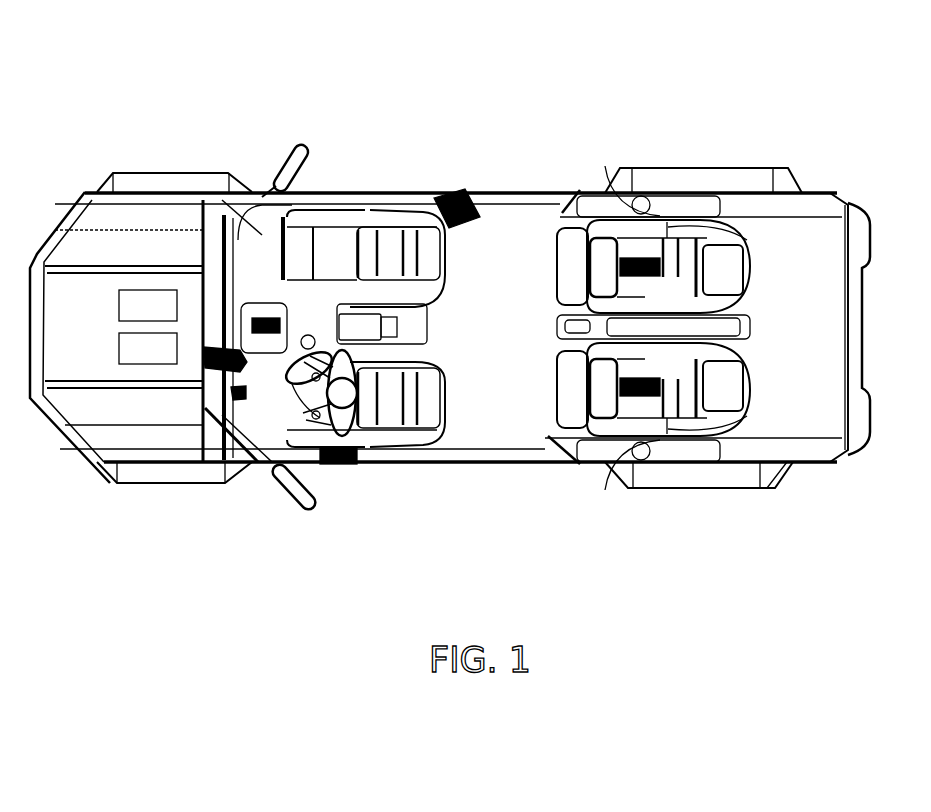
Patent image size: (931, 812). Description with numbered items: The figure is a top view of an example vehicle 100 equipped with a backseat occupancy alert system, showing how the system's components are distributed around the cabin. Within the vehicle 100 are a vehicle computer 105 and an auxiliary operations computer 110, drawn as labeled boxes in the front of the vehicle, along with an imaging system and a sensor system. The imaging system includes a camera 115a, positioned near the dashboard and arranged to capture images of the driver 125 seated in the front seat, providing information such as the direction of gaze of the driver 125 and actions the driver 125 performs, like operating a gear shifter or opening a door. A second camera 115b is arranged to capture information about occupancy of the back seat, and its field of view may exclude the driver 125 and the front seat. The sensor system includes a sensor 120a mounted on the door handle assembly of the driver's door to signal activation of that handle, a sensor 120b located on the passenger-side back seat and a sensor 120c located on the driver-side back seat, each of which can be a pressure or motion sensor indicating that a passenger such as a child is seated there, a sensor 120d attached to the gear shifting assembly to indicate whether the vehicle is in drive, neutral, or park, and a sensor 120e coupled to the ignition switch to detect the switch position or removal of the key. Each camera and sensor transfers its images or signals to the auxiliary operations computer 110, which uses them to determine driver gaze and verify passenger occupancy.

The vehicle 100 is at (90, 92).
The vehicle computer 105 is at (148, 305).
The auxiliary operations computer 110 is at (148, 348).
The camera 115a is at (240, 373).
The camera 115b is at (457, 230).
The sensor 120a is at (337, 467).
The sensor 120b is at (637, 278).
The sensor 120c is at (638, 397).
The sensor 120d is at (284, 315).
The sensor 120e is at (240, 399).
The driver 125 is at (357, 364).